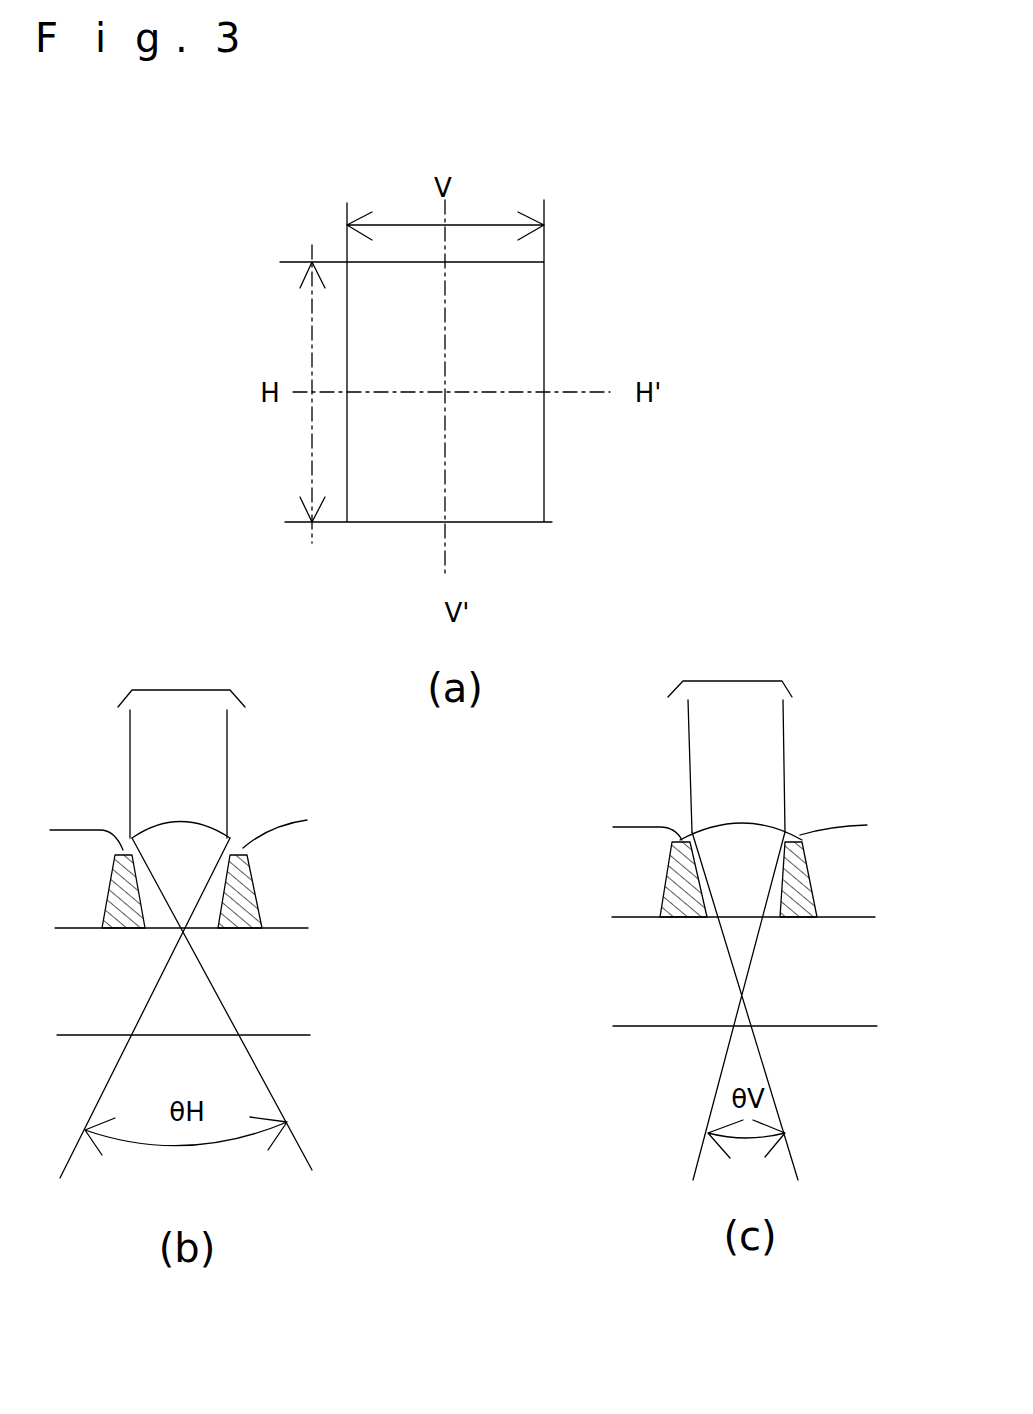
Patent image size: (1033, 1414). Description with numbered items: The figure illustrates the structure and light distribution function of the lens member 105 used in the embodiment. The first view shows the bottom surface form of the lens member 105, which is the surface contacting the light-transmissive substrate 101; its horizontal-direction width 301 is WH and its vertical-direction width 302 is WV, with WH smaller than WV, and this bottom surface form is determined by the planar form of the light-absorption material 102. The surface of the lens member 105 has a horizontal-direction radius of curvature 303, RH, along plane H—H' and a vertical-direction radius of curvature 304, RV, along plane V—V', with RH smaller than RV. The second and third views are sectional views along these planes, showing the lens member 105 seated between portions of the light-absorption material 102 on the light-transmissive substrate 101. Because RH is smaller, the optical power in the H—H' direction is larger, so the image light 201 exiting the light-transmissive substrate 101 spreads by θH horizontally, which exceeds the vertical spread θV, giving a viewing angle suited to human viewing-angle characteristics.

The horizontal-direction width 301 is at (487, 225).
The vertical-direction width 302 is at (312, 330).
The lens member 105 is at (523, 277).
The image light 201 is at (455, 734).
The horizontal-direction radius of curvature 303 is at (147, 825).
The vertical-direction radius of curvature 304 is at (767, 823).
The light-absorption material 102 is at (672, 883).
The light-transmissive substrate 101 is at (263, 987).